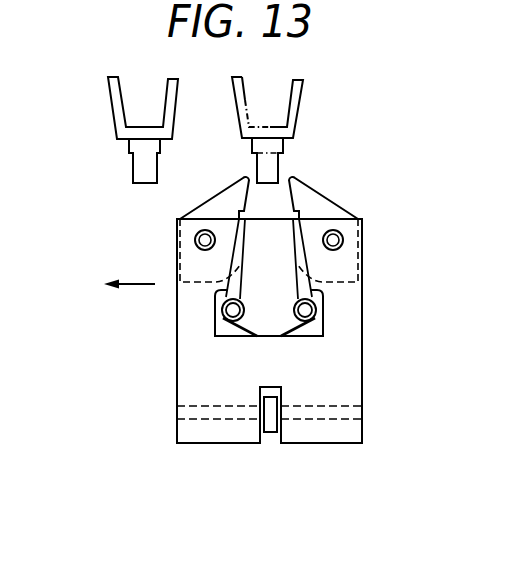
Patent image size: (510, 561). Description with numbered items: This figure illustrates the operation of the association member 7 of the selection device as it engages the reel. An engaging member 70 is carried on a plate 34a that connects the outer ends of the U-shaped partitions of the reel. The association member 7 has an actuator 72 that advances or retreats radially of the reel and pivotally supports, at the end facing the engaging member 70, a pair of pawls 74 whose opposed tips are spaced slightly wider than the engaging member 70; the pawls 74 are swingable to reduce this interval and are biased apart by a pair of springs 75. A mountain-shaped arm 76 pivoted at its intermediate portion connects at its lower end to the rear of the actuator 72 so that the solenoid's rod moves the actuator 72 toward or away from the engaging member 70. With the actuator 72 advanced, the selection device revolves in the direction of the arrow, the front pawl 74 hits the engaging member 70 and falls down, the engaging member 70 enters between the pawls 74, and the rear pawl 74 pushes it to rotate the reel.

The association member 7 is at (363, 352).
The plate 34a is at (133, 135).
The engaging member 70 is at (140, 172).
The actuator 72 is at (363, 308).
The pawls 74 is at (317, 202).
The springs 75 is at (287, 328).
The mountain-shaped arm 76 is at (272, 433).